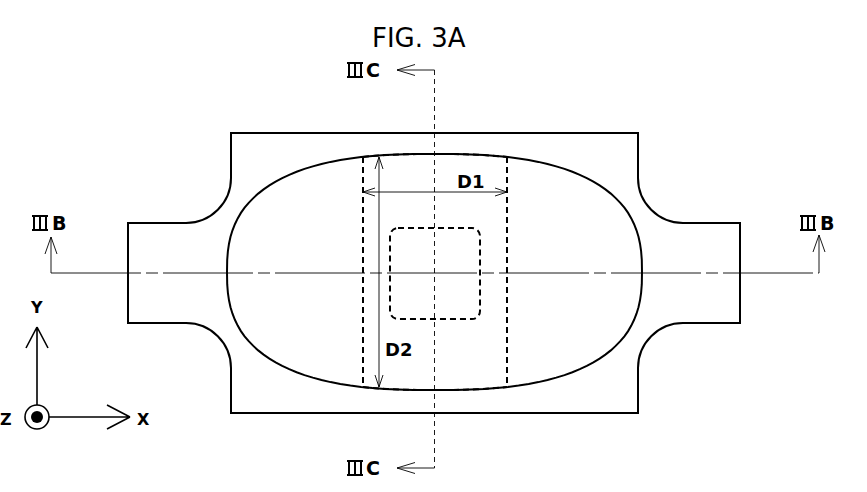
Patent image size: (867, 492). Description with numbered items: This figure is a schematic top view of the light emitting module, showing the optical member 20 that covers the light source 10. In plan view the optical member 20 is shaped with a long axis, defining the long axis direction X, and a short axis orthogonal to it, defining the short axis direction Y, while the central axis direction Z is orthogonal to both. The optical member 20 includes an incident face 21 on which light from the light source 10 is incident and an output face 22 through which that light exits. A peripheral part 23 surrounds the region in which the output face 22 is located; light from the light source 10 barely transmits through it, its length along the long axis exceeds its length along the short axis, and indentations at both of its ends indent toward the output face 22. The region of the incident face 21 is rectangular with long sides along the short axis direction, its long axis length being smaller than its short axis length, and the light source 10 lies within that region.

The light emitting element 10 is at (447, 283).
The lens 20 is at (495, 133).
The projection region 21 is at (508, 315).
The lens surface 22 is at (558, 166).
The flange portion 23 is at (170, 263).